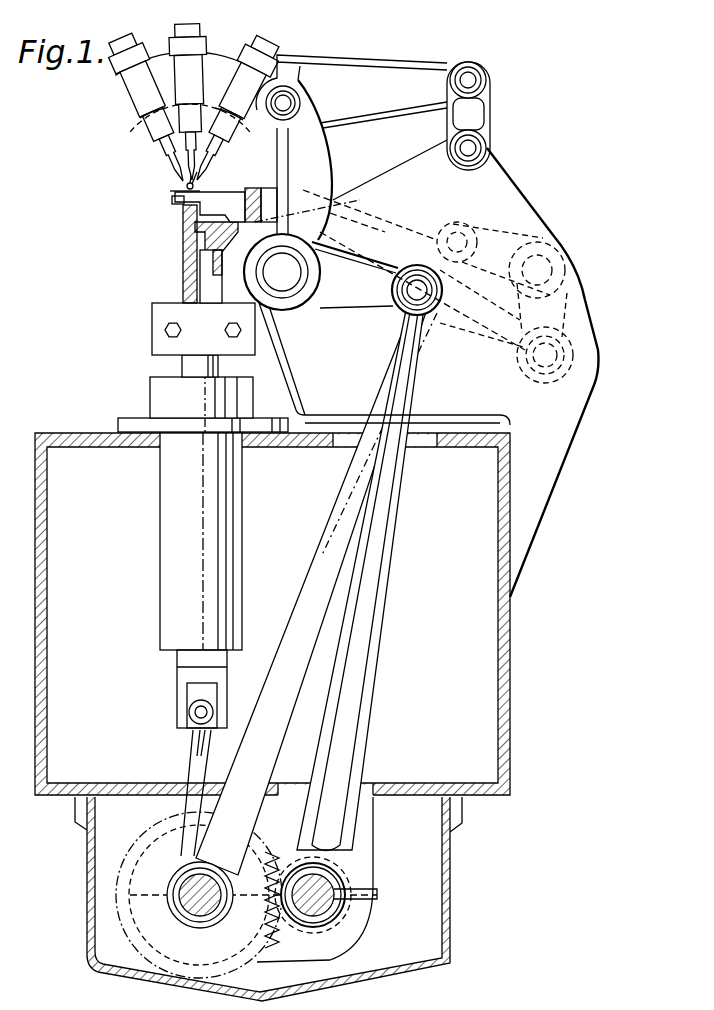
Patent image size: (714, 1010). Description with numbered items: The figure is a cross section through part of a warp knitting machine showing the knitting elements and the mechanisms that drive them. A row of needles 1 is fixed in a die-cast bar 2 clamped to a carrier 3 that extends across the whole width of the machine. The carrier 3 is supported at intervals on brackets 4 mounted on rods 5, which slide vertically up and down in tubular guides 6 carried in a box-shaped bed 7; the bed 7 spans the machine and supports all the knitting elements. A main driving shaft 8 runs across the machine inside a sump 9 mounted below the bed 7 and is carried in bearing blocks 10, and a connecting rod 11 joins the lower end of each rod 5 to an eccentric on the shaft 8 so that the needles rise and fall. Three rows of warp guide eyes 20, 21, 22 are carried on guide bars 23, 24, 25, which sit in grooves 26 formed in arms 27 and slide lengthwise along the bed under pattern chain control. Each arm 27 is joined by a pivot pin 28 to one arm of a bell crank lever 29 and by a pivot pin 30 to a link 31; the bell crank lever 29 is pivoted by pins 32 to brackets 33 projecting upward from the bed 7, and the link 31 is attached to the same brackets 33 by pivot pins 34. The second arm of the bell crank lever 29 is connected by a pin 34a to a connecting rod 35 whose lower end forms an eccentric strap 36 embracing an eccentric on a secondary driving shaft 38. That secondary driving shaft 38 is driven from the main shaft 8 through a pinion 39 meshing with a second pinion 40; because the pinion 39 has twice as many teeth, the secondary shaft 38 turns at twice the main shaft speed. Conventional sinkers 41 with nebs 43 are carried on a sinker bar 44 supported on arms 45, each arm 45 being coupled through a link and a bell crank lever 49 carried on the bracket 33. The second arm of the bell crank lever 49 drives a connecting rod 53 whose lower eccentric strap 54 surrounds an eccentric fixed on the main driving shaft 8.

The needles 1 is at (180, 207).
The die-cast bar 2 is at (183, 227).
The carrier 3 is at (222, 248).
The brackets 4 is at (158, 323).
The rods 5 is at (182, 367).
The tubular guides 6 is at (170, 548).
The box-shaped bed 7 is at (503, 618).
The main driving shaft 8 is at (187, 910).
The sump 9 is at (452, 890).
The bearing blocks 10 is at (370, 825).
The connecting rod 11 is at (189, 762).
The warp guide eyes 20 is at (186, 182).
The warp guide eyes 21 is at (200, 181).
The warp guide eyes 22 is at (199, 188).
The guide bar 23 is at (143, 122).
The guide bar 24 is at (187, 127).
The guide bar 25 is at (230, 133).
The grooves 26 is at (214, 124).
The arms 27 is at (157, 55).
The pivot pin 28 is at (292, 103).
The bell crank lever 29 is at (318, 153).
The pivot pin 30 is at (474, 80).
The link 31 is at (490, 121).
The pins 32 is at (282, 282).
The brackets 33 is at (521, 197).
The pivot pins 34 is at (474, 150).
The pin 34a is at (430, 297).
The connecting rod 35 is at (362, 620).
The eccentric strap 36 is at (337, 923).
The secondary driving shaft 38 is at (337, 885).
The pinion 39 is at (123, 912).
The second pinion 40 is at (358, 913).
The sinkers 41 is at (178, 197).
The nebs 43 is at (177, 190).
The sinker bar 44 is at (275, 205).
The arms 45 is at (380, 227).
The bell crank lever 49 is at (586, 288).
The connecting rod 53 is at (327, 567).
The eccentric strap 54 is at (207, 915).